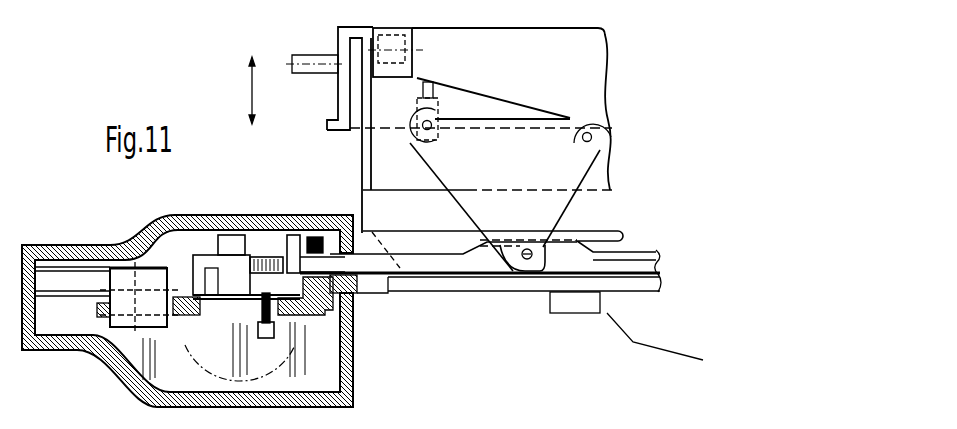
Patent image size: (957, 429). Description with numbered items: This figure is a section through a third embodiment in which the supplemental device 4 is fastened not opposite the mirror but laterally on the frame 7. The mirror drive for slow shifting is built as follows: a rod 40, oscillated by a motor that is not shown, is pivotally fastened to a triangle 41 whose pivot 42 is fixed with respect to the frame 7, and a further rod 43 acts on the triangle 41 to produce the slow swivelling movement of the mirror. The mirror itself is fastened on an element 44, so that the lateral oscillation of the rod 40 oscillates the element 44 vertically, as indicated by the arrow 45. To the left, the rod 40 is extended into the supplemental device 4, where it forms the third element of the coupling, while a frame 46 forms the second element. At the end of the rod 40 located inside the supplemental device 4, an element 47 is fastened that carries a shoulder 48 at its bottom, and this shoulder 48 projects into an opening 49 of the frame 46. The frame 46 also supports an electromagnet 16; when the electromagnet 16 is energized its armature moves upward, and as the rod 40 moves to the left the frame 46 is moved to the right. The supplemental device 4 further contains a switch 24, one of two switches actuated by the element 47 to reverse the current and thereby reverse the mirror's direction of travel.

The supplemental device 4 is at (210, 215).
The frame 7 is at (355, 158).
The electromagnet 16 is at (353, 338).
The switch 24 is at (133, 308).
The rod 40 is at (437, 263).
The triangle 41 is at (522, 143).
The pivot 42 is at (593, 136).
The rod 43 is at (436, 108).
The element 44 is at (412, 50).
The arrow 45 is at (258, 101).
The frame 46 is at (320, 237).
The element 47 is at (242, 245).
The shoulder 48 is at (292, 325).
The opening 49 is at (205, 323).